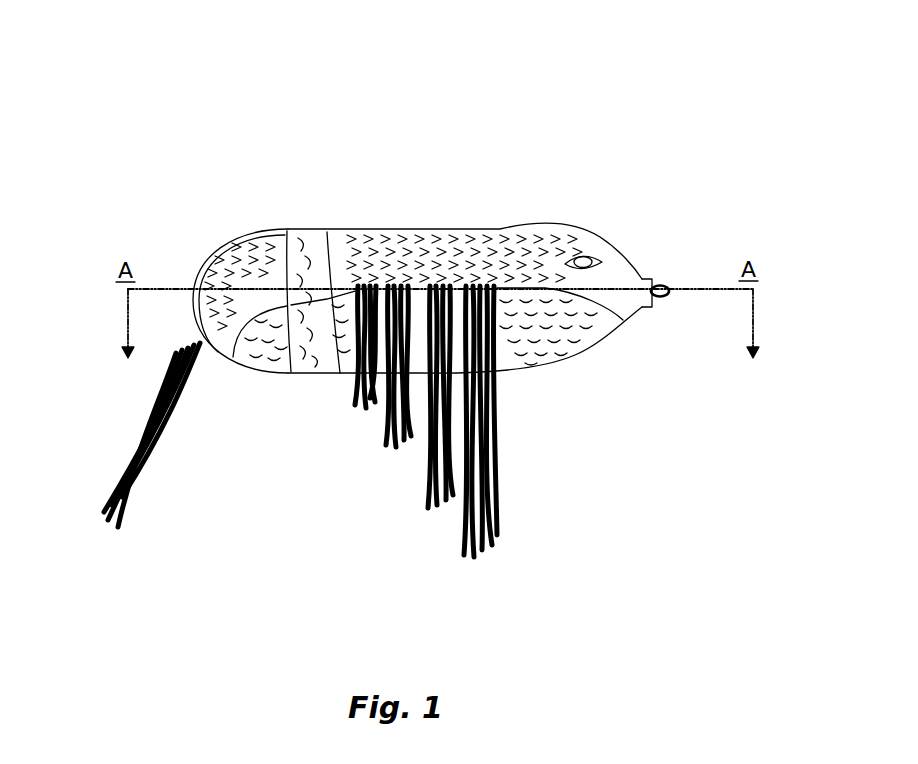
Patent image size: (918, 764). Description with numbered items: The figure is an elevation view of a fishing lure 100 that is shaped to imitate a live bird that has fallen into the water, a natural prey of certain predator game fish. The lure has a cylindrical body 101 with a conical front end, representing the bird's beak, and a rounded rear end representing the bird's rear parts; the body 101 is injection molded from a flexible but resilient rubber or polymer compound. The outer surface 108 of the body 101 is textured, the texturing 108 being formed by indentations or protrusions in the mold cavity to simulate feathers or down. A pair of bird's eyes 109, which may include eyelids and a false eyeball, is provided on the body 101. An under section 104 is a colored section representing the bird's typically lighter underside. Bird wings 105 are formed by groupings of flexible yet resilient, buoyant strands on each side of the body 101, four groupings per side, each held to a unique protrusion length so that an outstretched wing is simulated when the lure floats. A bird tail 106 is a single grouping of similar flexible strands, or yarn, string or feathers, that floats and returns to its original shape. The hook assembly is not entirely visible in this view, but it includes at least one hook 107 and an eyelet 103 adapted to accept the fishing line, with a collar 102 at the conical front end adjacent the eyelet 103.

The fishing lure 100 is at (459, 84).
The cylindrical body 101 is at (357, 229).
The collar / neck 102 is at (645, 279).
The eyelet 103 is at (668, 295).
The under section 104 is at (518, 343).
The bird wings 105 is at (368, 453).
The bird tail 106 is at (124, 448).
The hook 107 is at (243, 240).
The textured outer surface 108 is at (387, 253).
The bird's eyes 109 is at (575, 260).